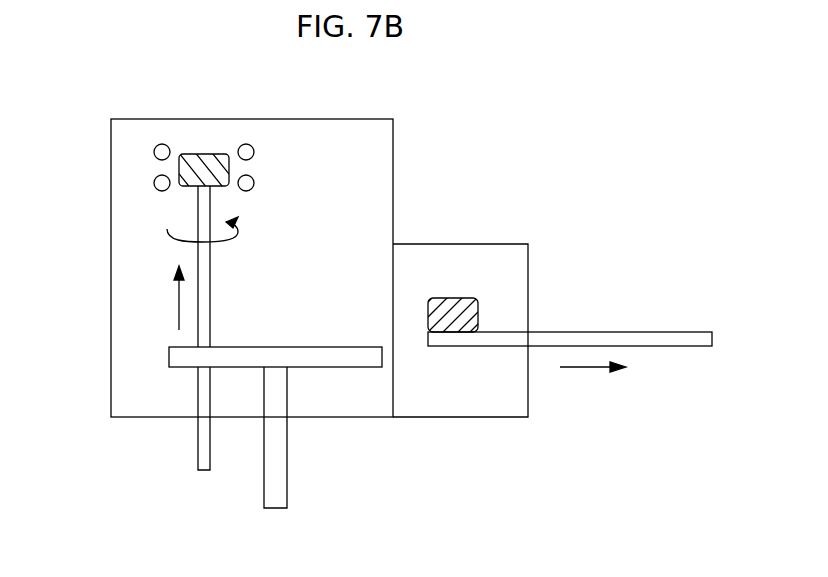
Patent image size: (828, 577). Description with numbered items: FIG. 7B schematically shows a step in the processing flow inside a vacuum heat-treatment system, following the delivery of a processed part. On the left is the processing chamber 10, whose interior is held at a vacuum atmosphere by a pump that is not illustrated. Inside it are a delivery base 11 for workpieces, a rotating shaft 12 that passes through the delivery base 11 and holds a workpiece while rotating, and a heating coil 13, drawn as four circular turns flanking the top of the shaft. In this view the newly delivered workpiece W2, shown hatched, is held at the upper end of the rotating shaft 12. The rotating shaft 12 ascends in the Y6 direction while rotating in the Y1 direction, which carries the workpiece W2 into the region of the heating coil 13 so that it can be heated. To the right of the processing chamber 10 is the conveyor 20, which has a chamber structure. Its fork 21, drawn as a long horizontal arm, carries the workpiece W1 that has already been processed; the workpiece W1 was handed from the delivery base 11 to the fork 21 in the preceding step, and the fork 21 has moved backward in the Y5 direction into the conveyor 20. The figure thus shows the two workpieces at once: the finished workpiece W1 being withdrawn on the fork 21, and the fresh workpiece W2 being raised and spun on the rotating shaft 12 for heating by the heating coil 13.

The processing chamber 10 is at (393, 134).
The conveyor 20 is at (497, 244).
The heating coil 13 is at (153, 150).
The workpiece W2 is at (200, 162).
The rotating shaft 12 is at (202, 452).
The delivery base 11 is at (275, 473).
The workpiece W1 is at (468, 317).
The fork 21 is at (653, 336).
The rotation direction Y1 is at (219, 231).
The ascending direction Y6 is at (161, 298).
The backward movement direction Y5 is at (593, 381).